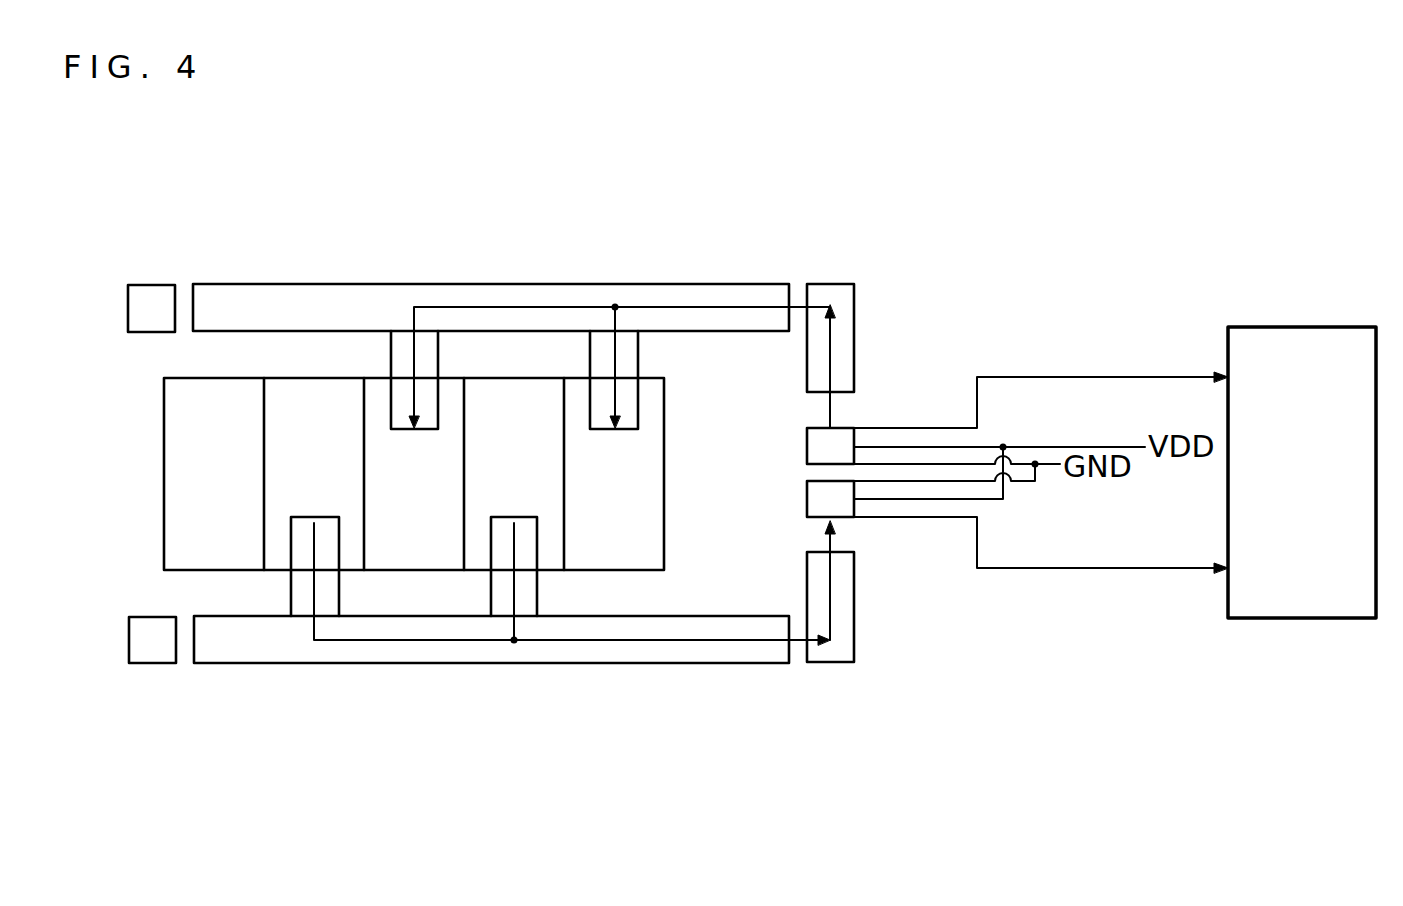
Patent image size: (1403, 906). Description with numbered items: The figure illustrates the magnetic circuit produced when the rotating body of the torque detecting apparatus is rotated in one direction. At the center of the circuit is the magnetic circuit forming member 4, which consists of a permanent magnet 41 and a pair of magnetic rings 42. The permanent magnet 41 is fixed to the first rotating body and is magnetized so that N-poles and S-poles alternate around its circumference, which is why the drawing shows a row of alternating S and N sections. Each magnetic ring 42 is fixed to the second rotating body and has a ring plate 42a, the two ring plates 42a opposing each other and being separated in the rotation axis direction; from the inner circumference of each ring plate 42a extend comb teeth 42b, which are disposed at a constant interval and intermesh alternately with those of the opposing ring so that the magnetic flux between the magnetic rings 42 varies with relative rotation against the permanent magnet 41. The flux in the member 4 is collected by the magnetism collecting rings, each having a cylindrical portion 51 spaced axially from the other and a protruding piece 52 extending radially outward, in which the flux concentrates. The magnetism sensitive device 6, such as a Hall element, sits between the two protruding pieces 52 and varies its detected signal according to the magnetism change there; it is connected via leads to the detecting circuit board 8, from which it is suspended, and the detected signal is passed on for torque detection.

The magnetic circuit forming member 4 is at (275, 245).
The permanent magnet 41 is at (164, 441).
The magnetic ring 42 is at (369, 284).
The ring plate 42a is at (624, 283).
The comb tooth 42b is at (390, 353).
The cylindrical portion 51 is at (150, 283).
The protruding piece 52 is at (854, 322).
The magnetism sensitive device 6 is at (838, 430).
The detecting circuit board 8 is at (1290, 326).